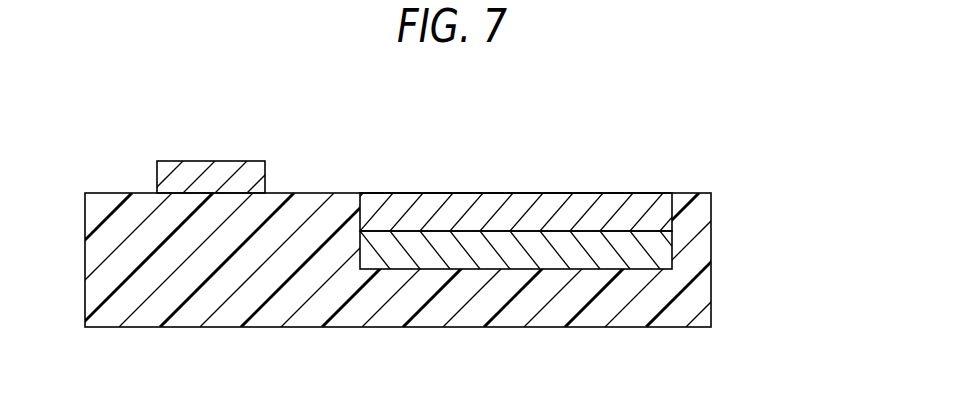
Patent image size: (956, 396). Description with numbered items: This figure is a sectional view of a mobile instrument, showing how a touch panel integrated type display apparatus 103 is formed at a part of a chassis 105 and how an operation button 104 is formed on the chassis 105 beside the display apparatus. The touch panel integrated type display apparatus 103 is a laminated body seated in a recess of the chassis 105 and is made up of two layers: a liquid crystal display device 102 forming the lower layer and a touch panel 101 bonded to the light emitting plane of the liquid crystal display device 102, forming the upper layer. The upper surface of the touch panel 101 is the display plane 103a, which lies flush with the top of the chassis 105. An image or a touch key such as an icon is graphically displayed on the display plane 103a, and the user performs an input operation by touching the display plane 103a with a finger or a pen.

The touch panel 101 is at (665, 216).
The liquid crystal display device 102 is at (665, 254).
The touch panel integrated type display apparatus 103 is at (583, 228).
The display plane 103a is at (504, 186).
The operation button 104 is at (222, 168).
The chassis 105 is at (225, 320).